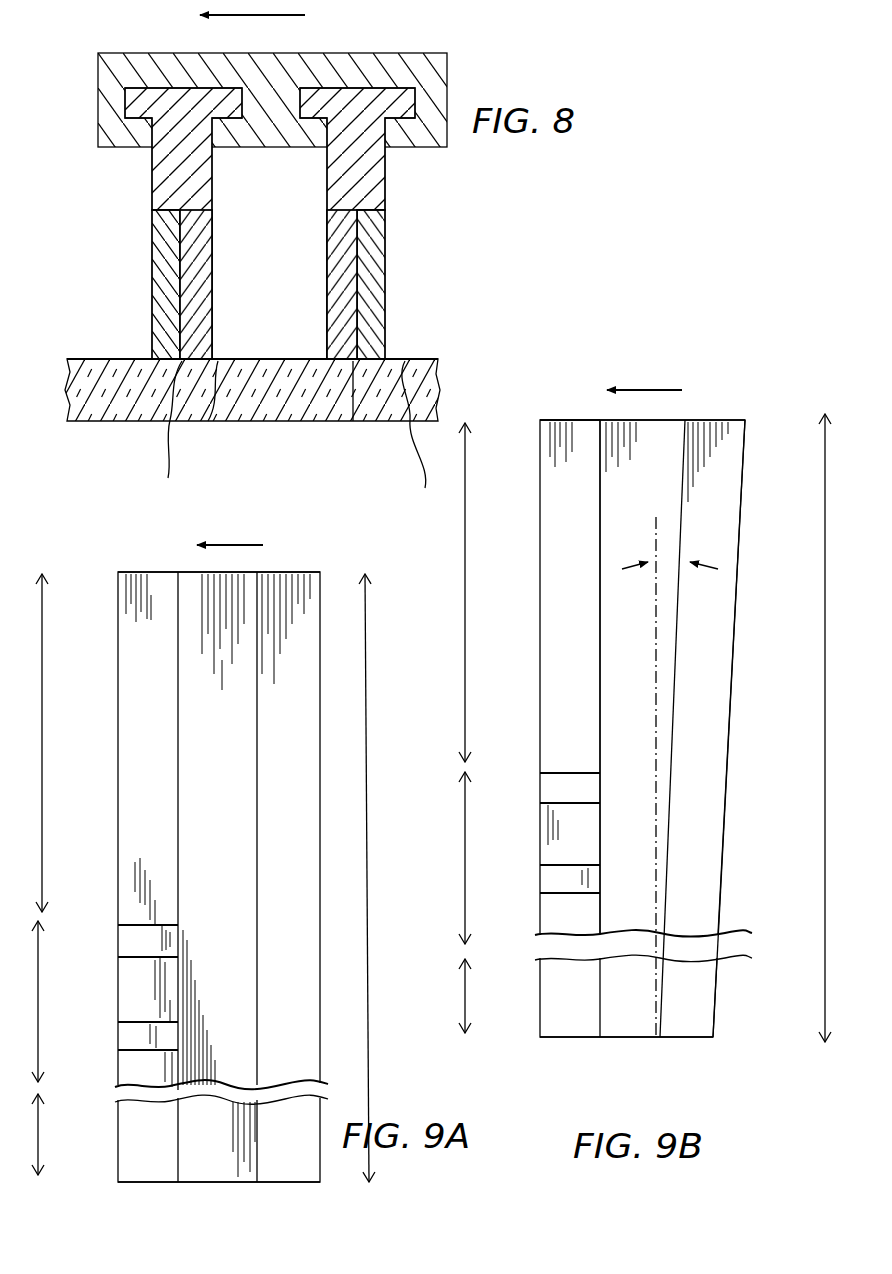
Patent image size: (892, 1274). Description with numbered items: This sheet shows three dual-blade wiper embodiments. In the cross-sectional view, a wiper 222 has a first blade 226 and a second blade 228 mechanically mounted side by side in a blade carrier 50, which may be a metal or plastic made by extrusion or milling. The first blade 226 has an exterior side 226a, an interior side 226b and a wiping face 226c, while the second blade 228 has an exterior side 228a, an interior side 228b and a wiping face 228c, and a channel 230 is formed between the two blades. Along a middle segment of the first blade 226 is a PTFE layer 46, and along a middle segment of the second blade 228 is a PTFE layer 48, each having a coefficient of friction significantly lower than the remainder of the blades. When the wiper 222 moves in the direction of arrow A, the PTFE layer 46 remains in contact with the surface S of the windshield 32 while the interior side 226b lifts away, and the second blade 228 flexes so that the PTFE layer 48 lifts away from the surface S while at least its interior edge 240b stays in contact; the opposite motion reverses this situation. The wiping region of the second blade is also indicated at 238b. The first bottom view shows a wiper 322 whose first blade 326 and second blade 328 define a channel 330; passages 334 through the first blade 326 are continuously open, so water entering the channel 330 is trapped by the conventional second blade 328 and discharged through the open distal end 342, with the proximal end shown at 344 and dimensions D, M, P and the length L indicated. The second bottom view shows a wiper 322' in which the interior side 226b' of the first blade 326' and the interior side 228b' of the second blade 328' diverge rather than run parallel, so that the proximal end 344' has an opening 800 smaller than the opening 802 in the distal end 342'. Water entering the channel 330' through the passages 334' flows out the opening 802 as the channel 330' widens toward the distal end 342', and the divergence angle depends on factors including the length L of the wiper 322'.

In FIG. 8, the arrow A is at (305, 15).
In FIG. 8, the blade carrier 50 is at (272, 95).
In FIG. 8, the wiper 222 is at (142, 182).
In FIG. 8, the first blade 226 is at (200, 176).
In FIG. 8, the exterior side 226a is at (152, 198).
In FIG. 8, the interior side 226b is at (238, 284).
In FIG. 8, the wiping face 226c is at (172, 435).
In FIG. 8, the second blade 228 is at (368, 178).
In FIG. 8, the exterior side 228a is at (388, 192).
In FIG. 8, the interior side 228b is at (303, 284).
In FIG. 8, the wiping face 228c is at (429, 440).
In FIG. 8, the channel 230 is at (269, 199).
In FIG. 8, the PTFE layer 46 is at (156, 270).
In FIG. 8, the PTFE layer 48 is at (375, 284).
In FIG. 8, the surface S is at (398, 368).
In FIG. 8, the windshield 32 is at (272, 395).
In FIG. 8, the first contact region 238b is at (208, 423).
In FIG. 8, the interior edge 240b is at (353, 423).
In FIG. 9A, the wiper 322 is at (191, 877).
In FIG. 9A, the open distal end 342 is at (212, 553).
In FIG. 9A, the channel 330 is at (217, 690).
In FIG. 9A, the second blade 328 is at (320, 693).
In FIG. 9A, the passages 334 is at (118, 979).
In FIG. 9A, the first blade 326 is at (117, 1062).
In FIG. 9A, the bottom surface 344 is at (219, 1199).
In FIG. 9A, the distance D is at (42, 690).
In FIG. 9B, the distance D is at (465, 592).
In FIG. 9A, the distance M is at (38, 975).
In FIG. 9B, the distance M is at (465, 835).
In FIG. 9A, the distance P is at (38, 1108).
In FIG. 9B, the distance P is at (465, 998).
In FIG. 9A, the length L is at (263, 545).
In FIG. 9B, the length L is at (698, 380).
In FIG. 9B, the wiper 322' is at (609, 728).
In FIG. 9B, the opening 802 is at (578, 420).
In FIG. 9B, the distal end 342' is at (666, 404).
In FIG. 9B, the interior side 226b' is at (644, 677).
In FIG. 9B, the interior side 228b' is at (739, 728).
In FIG. 9B, the channel 330' is at (629, 777).
In FIG. 9B, the second blade 328' is at (745, 728).
In FIG. 9B, the passages 334' is at (537, 825).
In FIG. 9B, the first blade 326' is at (601, 907).
In FIG. 9B, the proximal end 344' is at (572, 1077).
In FIG. 9B, the opening 800 is at (640, 1042).